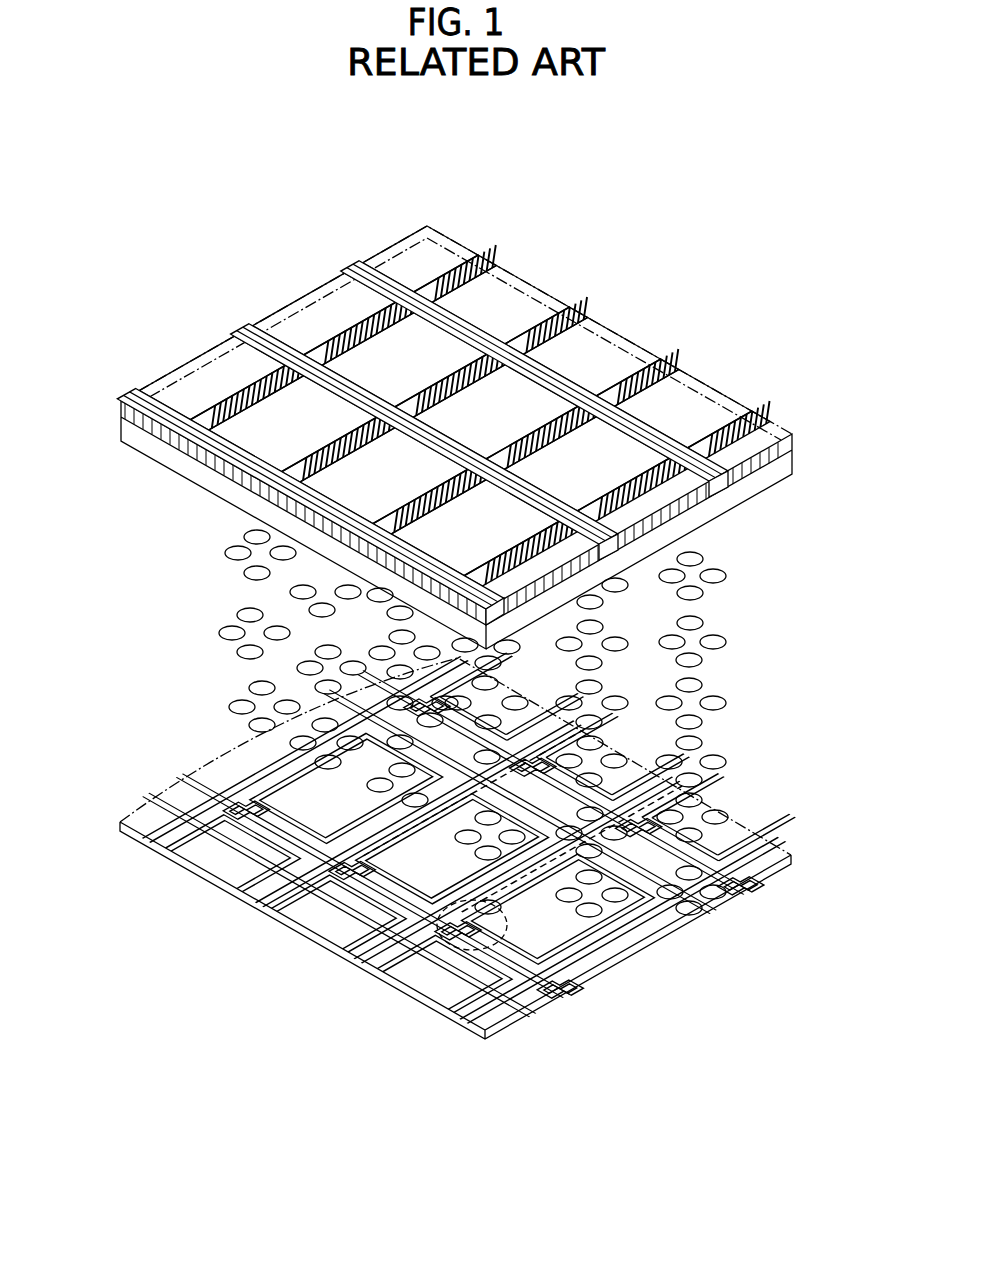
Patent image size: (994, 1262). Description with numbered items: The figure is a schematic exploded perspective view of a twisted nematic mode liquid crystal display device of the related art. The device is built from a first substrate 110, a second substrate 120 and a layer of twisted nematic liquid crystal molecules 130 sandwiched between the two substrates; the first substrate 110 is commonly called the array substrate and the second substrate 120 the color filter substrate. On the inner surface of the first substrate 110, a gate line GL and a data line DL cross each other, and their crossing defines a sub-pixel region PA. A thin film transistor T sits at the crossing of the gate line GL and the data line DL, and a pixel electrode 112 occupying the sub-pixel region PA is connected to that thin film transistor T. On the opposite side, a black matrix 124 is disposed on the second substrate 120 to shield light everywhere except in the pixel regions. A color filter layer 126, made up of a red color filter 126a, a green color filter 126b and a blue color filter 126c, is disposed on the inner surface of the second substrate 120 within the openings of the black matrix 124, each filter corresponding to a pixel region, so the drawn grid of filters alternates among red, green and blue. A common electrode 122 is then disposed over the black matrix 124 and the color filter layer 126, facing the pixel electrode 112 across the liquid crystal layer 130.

The first substrate 110 is at (457, 877).
The pixel electrode 112 is at (468, 853).
The second substrate 120 is at (430, 391).
The common electrode 122 is at (120, 403).
The black matrix 124 is at (657, 363).
The color filter layer 126 is at (445, 354).
The red color filter 126a is at (444, 237).
The green color filter 126b is at (518, 292).
The blue color filter 126c is at (600, 348).
The layer of twisted nematic liquid crystal molecules 130 is at (812, 477).
The sub-pixel region PA is at (365, 893).
The thin film transistor T is at (433, 943).
The data line DL is at (567, 953).
The gate line GL is at (550, 1000).